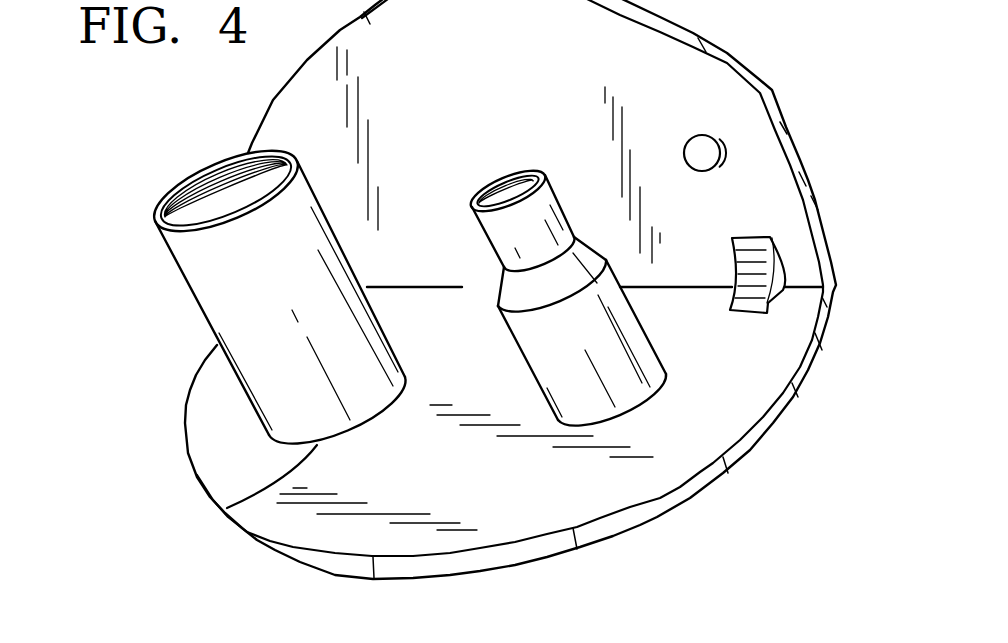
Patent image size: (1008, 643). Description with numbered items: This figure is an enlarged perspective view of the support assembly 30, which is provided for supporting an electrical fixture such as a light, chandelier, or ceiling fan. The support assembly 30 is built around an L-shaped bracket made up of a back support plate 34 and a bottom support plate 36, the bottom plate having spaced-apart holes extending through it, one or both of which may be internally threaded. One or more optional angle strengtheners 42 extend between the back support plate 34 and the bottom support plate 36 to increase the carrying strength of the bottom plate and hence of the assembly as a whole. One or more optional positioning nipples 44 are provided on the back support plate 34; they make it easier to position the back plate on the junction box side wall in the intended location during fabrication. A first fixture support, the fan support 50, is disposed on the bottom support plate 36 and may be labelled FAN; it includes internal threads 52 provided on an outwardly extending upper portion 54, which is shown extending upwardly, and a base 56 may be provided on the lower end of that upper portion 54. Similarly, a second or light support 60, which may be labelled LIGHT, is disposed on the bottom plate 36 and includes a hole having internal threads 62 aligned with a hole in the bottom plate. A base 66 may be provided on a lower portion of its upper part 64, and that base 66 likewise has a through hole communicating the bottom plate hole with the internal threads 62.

The support assembly 30 is at (243, 544).
The back support plate 34 is at (773, 105).
The bottom support plate 36 is at (813, 353).
The angle strengthener 42 is at (783, 267).
The positioning nipple 44 is at (715, 167).
The first fixture support 50 is at (294, 142).
The internal threads 52 is at (214, 192).
The upper portion 54 is at (203, 280).
The base 56 is at (228, 506).
The light support 60 is at (515, 300).
The internal threads 62 is at (517, 187).
The upper part 64 is at (488, 233).
The base 66 is at (645, 400).